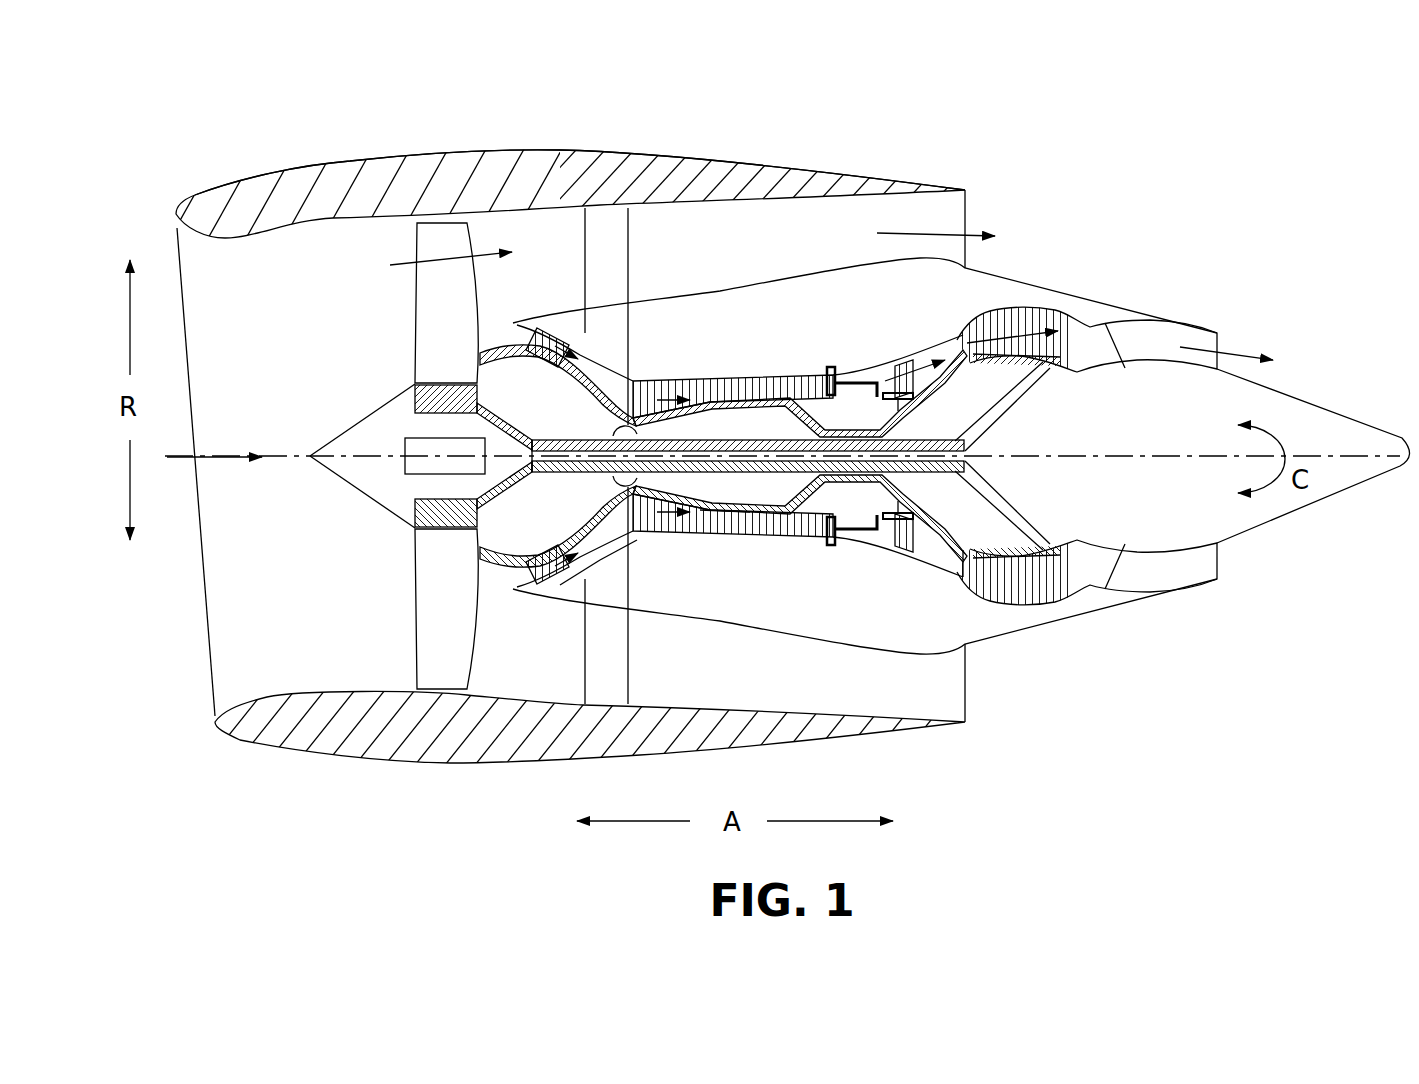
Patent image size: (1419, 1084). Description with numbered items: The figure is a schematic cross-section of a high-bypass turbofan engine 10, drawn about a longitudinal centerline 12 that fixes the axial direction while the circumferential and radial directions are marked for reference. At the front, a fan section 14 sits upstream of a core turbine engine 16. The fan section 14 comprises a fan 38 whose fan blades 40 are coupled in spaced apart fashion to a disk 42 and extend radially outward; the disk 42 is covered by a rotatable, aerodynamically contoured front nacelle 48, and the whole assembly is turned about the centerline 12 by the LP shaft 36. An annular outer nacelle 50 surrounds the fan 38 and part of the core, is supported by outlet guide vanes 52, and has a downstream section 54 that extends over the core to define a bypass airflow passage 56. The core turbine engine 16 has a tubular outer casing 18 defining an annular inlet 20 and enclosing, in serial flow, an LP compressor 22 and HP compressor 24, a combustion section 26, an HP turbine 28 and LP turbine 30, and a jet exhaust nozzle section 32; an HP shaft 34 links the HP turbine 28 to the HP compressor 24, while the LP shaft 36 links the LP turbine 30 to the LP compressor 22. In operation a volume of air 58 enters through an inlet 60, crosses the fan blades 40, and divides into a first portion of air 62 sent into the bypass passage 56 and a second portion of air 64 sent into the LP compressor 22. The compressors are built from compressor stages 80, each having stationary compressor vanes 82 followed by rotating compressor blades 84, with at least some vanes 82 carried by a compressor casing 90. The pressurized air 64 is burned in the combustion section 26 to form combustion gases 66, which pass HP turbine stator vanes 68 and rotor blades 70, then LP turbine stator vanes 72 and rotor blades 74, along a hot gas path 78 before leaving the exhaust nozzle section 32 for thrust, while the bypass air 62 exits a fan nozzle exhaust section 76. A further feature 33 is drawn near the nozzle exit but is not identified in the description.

The turbofan engine 10 is at (1208, 214).
The longitudinal centerline 12 is at (1132, 455).
The fan section 14 is at (492, 131).
The core turbine engine 16 is at (790, 330).
The outer casing 18 is at (813, 643).
The annular inlet 20 is at (527, 578).
The low pressure compressor 22 is at (590, 545).
The high pressure compressor 24 is at (660, 532).
The combustion section 26 is at (848, 545).
The high pressure turbine 28 is at (917, 533).
The low pressure turbine 30 is at (1062, 610).
The jet exhaust nozzle section 32 is at (1167, 323).
The core nozzle exit 33 is at (1222, 563).
The high pressure shaft 34 is at (857, 427).
The low pressure shaft 36 is at (580, 427).
The fan 38 is at (398, 304).
The fan blades 40 is at (410, 637).
The disk 42 is at (413, 398).
The front nacelle 48 is at (337, 427).
The outer nacelle 50 is at (478, 762).
The outlet guide vanes 52 is at (630, 230).
The downstream section 54 is at (785, 163).
The bypass airflow passage 56 is at (770, 251).
The volume of air 58 is at (210, 453).
The inlet 60 is at (210, 680).
The first portion of air 62 is at (417, 257).
The second portion of air 64 is at (500, 337).
The combustion gases 66 is at (1020, 330).
The HP turbine stator vanes 68 is at (887, 547).
The HP turbine rotor blades 70 is at (900, 540).
The LP turbine stator vanes 72 is at (970, 573).
The LP turbine rotor blades 74 is at (983, 580).
The fan nozzle exhaust section 76 is at (968, 212).
The hot gas path 78 is at (953, 345).
The compressor stages 80 is at (550, 333).
The compressor vanes 82 is at (553, 587).
The compressor blades 84 is at (562, 580).
The compressor casing 90 is at (730, 367).